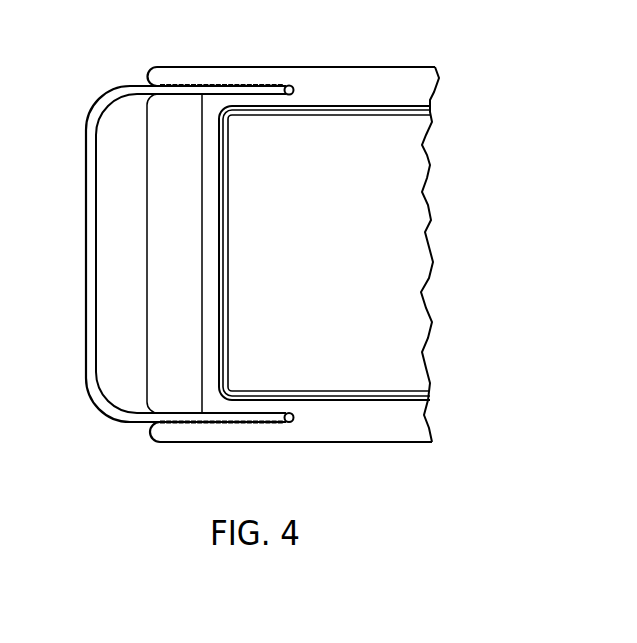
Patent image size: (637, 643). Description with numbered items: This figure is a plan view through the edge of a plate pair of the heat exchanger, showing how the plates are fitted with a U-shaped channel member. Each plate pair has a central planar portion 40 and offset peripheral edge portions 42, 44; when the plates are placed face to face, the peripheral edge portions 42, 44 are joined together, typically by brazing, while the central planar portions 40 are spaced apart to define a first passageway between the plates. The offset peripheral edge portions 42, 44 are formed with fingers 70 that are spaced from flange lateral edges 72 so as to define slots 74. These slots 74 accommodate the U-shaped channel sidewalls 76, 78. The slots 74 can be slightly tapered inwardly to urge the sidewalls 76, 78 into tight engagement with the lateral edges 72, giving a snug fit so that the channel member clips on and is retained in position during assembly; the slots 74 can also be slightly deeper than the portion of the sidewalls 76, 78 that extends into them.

The central planar portion 40 is at (375, 262).
The offset peripheral edge portion 42 is at (400, 418).
The offset peripheral edge portion 44 is at (413, 88).
The finger 70 is at (212, 78).
The flange lateral edge 72 is at (265, 88).
The slot 74 is at (290, 85).
The U-shaped channel sidewall 76 is at (188, 92).
The U-shaped channel sidewall 78 is at (203, 417).